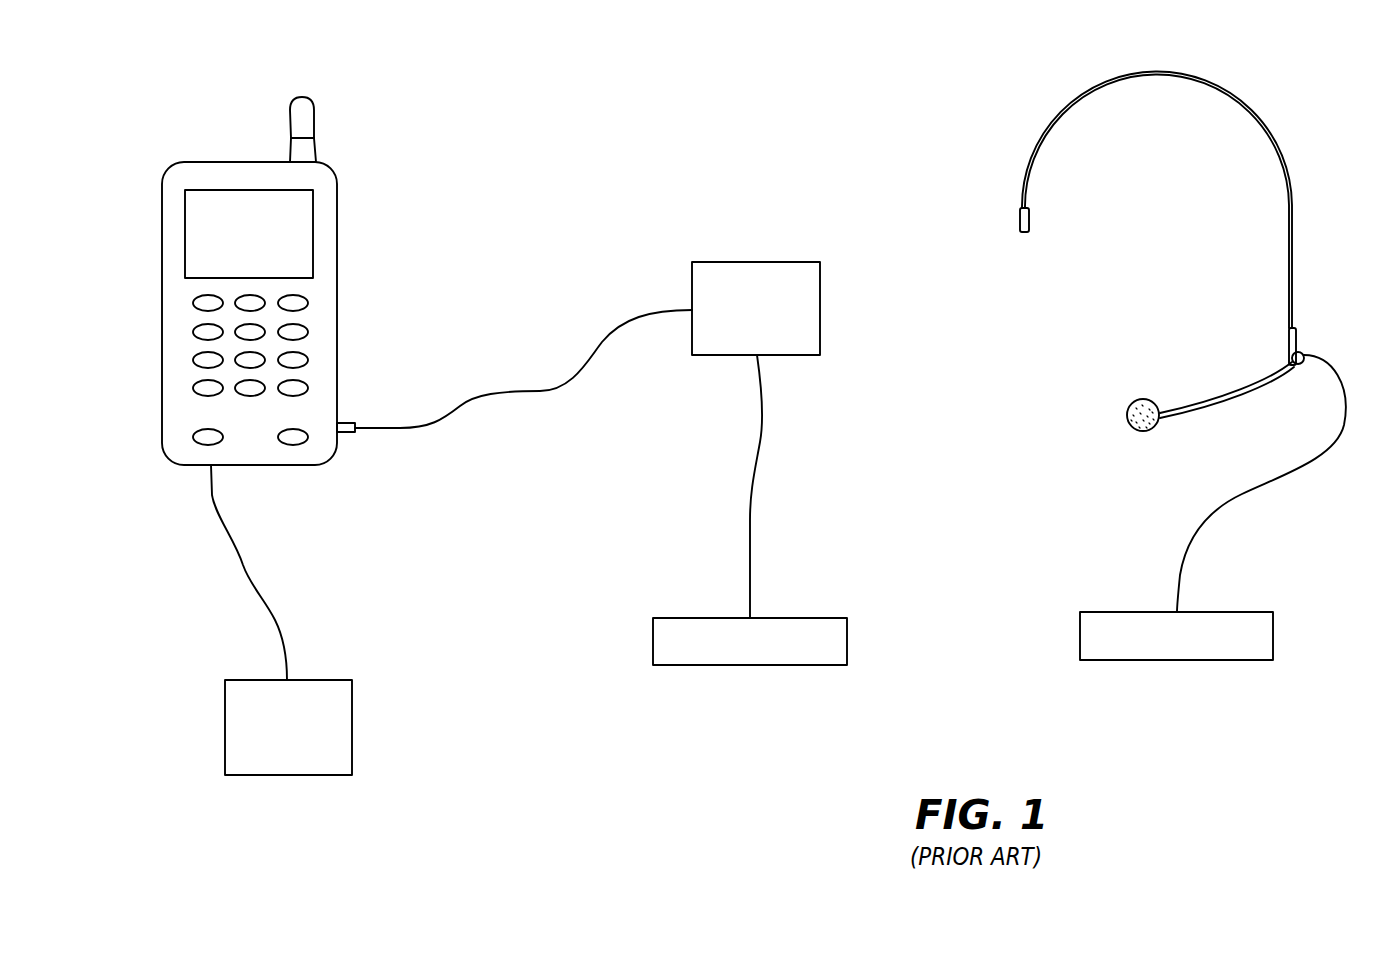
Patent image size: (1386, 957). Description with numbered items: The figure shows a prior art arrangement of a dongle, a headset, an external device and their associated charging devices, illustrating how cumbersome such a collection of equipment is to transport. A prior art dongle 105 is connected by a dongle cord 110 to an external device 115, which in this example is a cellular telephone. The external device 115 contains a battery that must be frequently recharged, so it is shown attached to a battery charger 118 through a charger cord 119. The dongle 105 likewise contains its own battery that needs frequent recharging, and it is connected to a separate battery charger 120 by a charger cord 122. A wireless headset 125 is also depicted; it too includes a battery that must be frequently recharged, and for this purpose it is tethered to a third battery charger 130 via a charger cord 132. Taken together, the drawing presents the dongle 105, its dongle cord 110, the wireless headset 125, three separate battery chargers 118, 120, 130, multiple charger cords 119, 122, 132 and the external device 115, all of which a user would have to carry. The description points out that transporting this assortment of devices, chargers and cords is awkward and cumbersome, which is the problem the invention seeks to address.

The dongle 105 is at (767, 272).
The dongle cord 110 is at (510, 391).
The external device 115 is at (322, 289).
The battery charger 118 is at (325, 680).
The charger cord 119 is at (257, 595).
The battery charger 120 is at (700, 618).
The charger cord 122 is at (750, 512).
The wireless headset 125 is at (1062, 108).
The battery charger 130 is at (1200, 645).
The charger cord 132 is at (1245, 490).